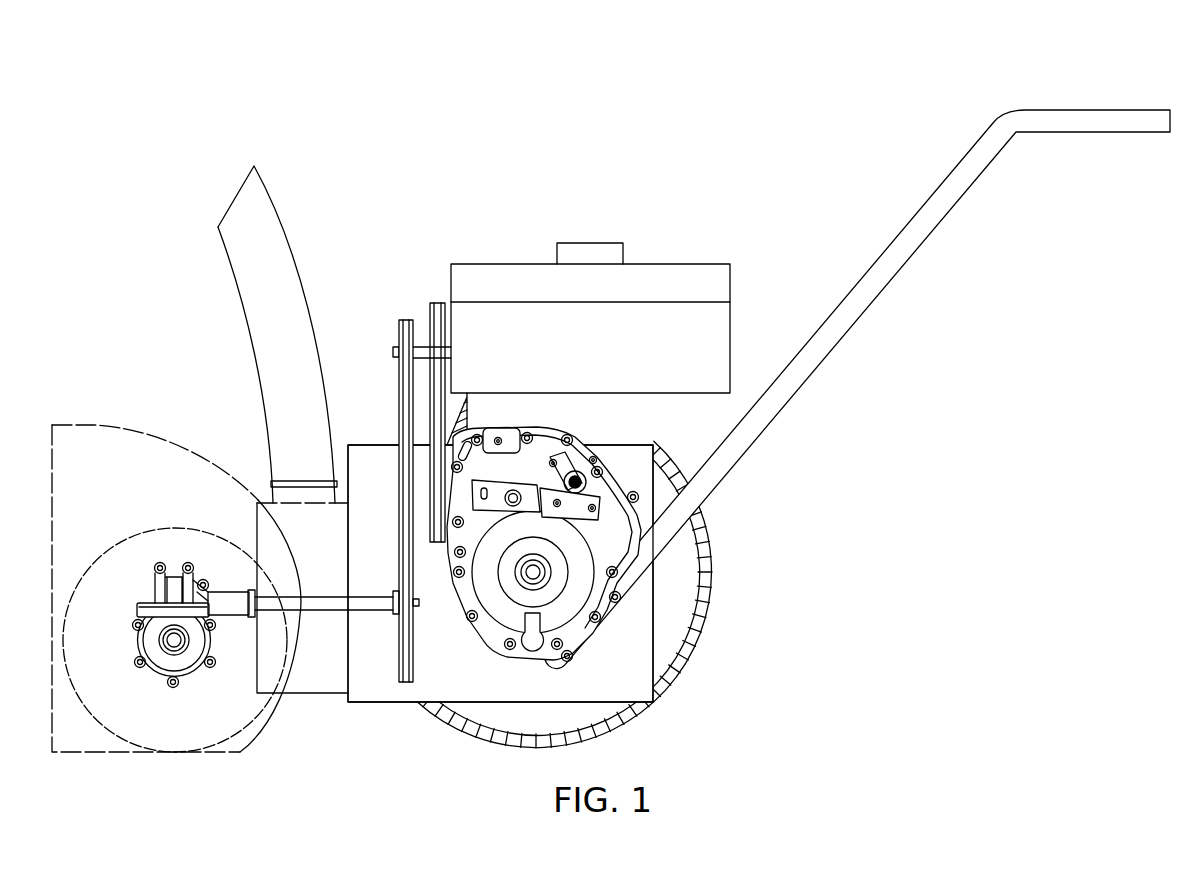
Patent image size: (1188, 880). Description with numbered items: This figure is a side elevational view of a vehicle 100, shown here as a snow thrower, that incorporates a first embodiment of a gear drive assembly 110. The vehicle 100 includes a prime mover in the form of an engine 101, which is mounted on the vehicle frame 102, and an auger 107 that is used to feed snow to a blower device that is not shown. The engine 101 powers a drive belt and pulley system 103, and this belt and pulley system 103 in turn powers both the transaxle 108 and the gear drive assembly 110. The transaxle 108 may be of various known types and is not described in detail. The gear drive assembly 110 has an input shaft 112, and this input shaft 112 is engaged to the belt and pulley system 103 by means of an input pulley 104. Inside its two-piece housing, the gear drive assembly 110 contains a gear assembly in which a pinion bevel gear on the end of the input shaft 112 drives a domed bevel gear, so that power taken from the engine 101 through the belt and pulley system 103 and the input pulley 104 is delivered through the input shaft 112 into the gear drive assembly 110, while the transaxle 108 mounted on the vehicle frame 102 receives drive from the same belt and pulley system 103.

The vehicle 100 is at (128, 92).
The engine 101 is at (610, 358).
The vehicle frame 102 is at (637, 657).
The drive belt and pulley system 103 is at (387, 320).
The input pulley 104 is at (412, 663).
The auger 107 is at (175, 527).
The transaxle 108 is at (630, 467).
The gear drive assembly 110 is at (133, 582).
The input shaft 112 is at (372, 613).